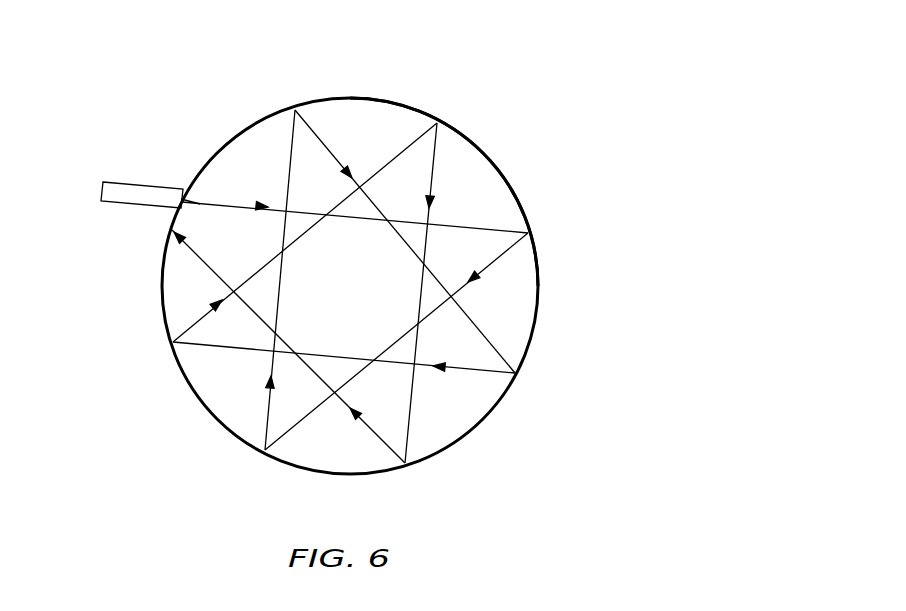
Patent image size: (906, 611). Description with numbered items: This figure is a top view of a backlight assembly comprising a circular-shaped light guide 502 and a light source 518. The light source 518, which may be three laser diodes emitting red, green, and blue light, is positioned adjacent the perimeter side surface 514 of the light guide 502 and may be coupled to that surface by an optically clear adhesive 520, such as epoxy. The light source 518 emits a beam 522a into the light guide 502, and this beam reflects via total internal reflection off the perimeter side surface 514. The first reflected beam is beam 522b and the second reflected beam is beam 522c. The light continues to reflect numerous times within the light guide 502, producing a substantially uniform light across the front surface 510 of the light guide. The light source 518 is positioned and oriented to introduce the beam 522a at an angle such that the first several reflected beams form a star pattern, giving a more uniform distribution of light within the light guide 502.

The light guide 502 is at (622, 118).
The front surface 510 is at (353, 115).
The perimeter side surface 514 is at (502, 172).
The light source 518 is at (123, 183).
The optically clear adhesive 520 is at (178, 201).
The beam 522a is at (222, 202).
The first reflected beam 522b is at (500, 258).
The second reflected beam 522c is at (269, 398).